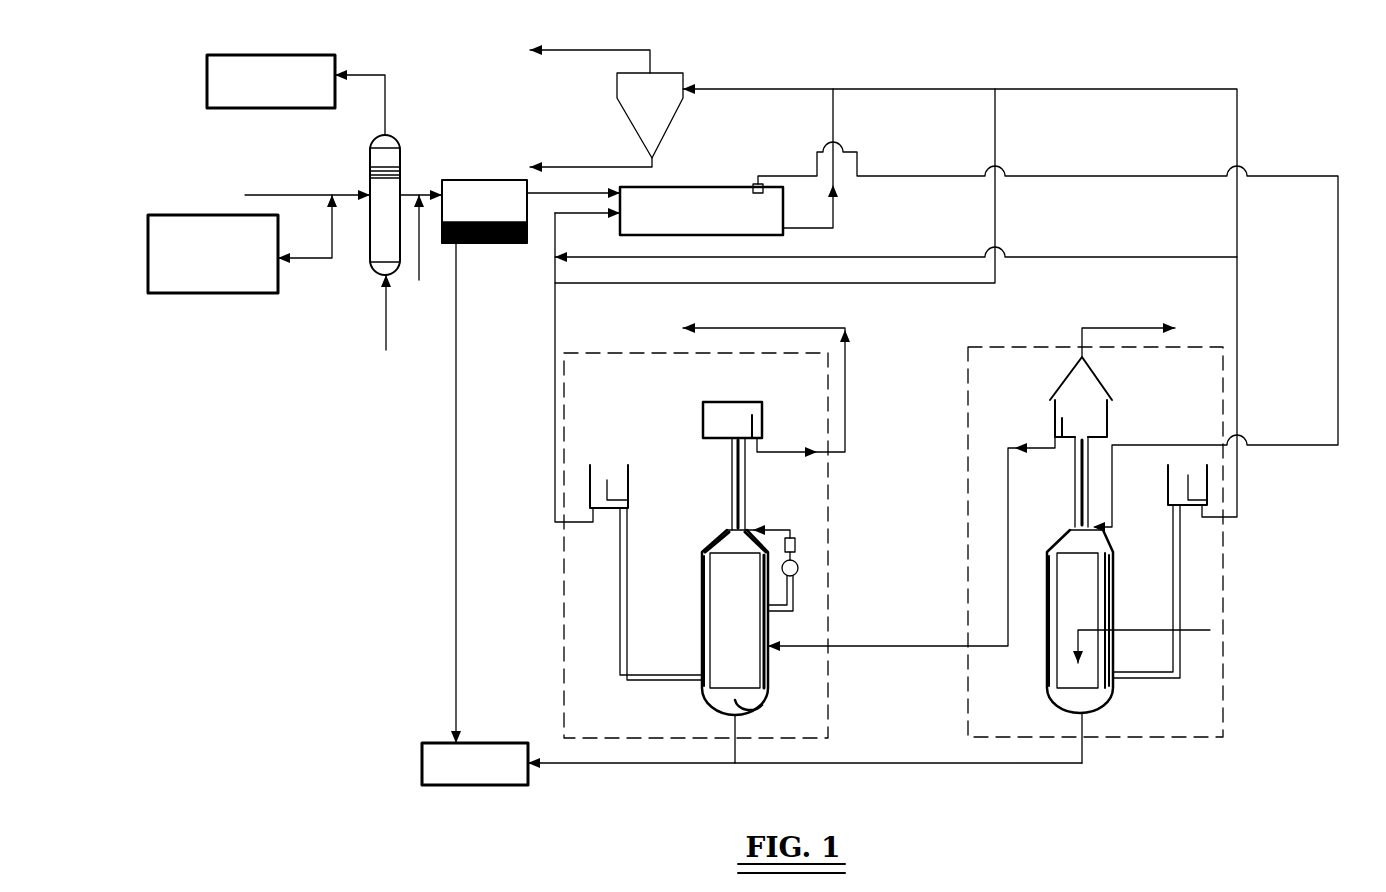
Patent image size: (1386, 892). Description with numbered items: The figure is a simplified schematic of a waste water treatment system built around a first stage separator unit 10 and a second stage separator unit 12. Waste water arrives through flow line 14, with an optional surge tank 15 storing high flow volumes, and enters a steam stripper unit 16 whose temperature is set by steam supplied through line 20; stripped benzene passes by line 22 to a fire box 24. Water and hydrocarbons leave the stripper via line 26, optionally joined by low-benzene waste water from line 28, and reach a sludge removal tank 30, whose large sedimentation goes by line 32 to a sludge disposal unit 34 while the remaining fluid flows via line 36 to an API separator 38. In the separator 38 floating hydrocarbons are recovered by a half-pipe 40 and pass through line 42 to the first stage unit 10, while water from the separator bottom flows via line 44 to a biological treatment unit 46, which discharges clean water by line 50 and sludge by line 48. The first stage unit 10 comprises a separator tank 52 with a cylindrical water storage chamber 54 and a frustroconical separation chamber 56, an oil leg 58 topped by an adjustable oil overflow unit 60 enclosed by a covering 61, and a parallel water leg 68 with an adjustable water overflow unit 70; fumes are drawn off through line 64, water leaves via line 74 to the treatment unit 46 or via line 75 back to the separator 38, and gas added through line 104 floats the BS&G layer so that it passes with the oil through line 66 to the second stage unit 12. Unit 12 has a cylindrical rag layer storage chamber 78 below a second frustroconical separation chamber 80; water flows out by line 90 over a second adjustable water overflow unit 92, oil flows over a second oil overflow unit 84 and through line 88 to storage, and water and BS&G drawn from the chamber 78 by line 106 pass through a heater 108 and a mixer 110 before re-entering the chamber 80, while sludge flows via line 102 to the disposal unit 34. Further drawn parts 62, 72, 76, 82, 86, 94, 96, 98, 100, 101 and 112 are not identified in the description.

The first stage separator unit 10 is at (1223, 620).
The second stage separator unit 12 is at (557, 635).
The flow line 14 is at (290, 195).
The surge tank 15 is at (225, 293).
The steam stripper unit 16 is at (400, 157).
The line 20 is at (385, 327).
The line 22 is at (388, 110).
The fire box 24 is at (207, 88).
The line 26 is at (413, 192).
The line 28 is at (419, 273).
The sludge removal tank 30 is at (500, 243).
The line 32 is at (452, 372).
The sludge disposal unit 34 is at (443, 743).
The line 36 is at (550, 197).
The API separator 38 is at (683, 185).
The half-pipe 40 is at (757, 184).
The line 42 is at (1337, 310).
The line 44 is at (837, 215).
The biological treatment unit 46 is at (683, 77).
The line 48 is at (656, 158).
The line 50 is at (598, 52).
The separator tank 52 is at (1040, 625).
The cylindrical water storage chamber 54 is at (1047, 652).
The frustroconical separation chamber 56 is at (1068, 530).
The oil leg 58 is at (1075, 493).
The adjustable oil overflow unit 60 is at (1102, 383).
The covering 61 is at (1065, 378).
The second overflow line 62 is at (1040, 448).
The line 64 is at (1082, 332).
The line 66 is at (1006, 512).
The water leg 68 is at (1178, 562).
The adjustable water overflow unit 70 is at (1168, 468).
The weir partition 72 is at (1183, 490).
The line 74 is at (1240, 318).
The line 75 is at (907, 257).
The first vessel 76 is at (695, 646).
The rag layer storage chamber 78 is at (702, 592).
The second frustroconical separation chamber 80 is at (712, 547).
The first riser pipe 82 is at (732, 512).
The second oil overflow unit 84 is at (703, 428).
The hood side wall 86 is at (762, 415).
The line 88 is at (848, 420).
The line 90 is at (620, 642).
The second adjustable water overflow unit 92 is at (617, 497).
The weir feed line 94 is at (588, 495).
The liquid feed line 96 is at (553, 448).
The second vessel bottom outlet 98 is at (1090, 712).
The first vessel bottom 100 is at (753, 700).
The first vessel bottom outlet 101 is at (733, 728).
The line 102 is at (613, 765).
The line 104 is at (1203, 632).
The line 106 is at (795, 603).
The heater 108 is at (799, 565).
The mixer 110 is at (792, 540).
The recirculation inlet line 112 is at (810, 538).